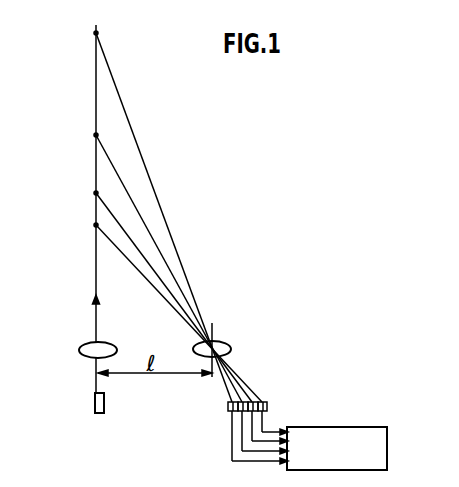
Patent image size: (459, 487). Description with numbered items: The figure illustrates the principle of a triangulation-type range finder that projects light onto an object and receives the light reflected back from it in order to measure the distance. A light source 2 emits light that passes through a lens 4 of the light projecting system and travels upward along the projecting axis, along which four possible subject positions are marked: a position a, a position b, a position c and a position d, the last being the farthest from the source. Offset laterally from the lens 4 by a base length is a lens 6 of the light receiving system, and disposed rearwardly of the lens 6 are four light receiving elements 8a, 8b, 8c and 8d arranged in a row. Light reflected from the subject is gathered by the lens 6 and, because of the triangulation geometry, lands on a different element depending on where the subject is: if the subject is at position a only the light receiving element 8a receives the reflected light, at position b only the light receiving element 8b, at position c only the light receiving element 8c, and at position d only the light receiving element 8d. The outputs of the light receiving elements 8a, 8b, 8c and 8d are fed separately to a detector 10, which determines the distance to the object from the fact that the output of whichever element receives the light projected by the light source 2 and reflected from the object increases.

The position a is at (96, 225).
The position b is at (96, 193).
The position c is at (95, 135).
The position d is at (95, 33).
The light source 2 is at (95, 400).
The lens in the light projecting system 4 is at (92, 344).
The lens in the light receiving system 6 is at (228, 345).
The light receiving element 8a is at (264, 400).
The light receiving element 8b is at (258, 412).
The light receiving element 8c is at (240, 413).
The light receiving element 8d is at (228, 405).
The detector 10 is at (352, 432).